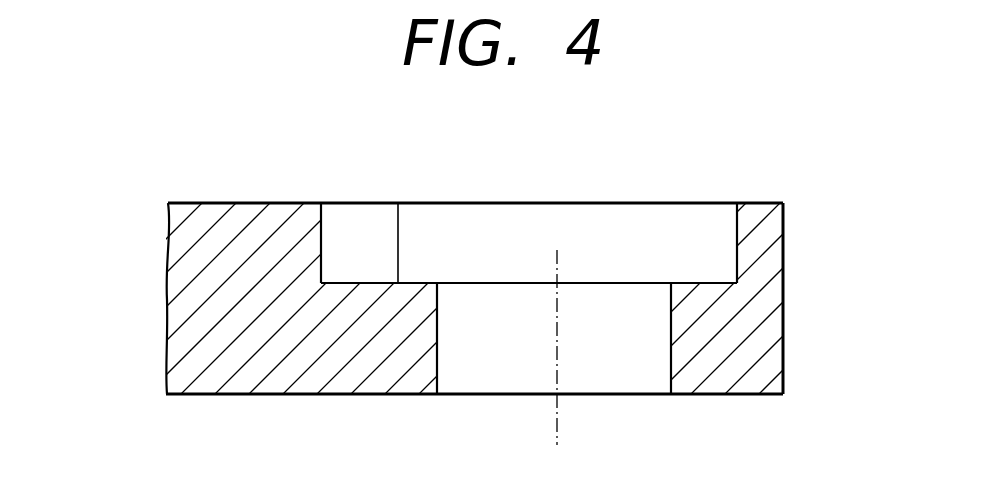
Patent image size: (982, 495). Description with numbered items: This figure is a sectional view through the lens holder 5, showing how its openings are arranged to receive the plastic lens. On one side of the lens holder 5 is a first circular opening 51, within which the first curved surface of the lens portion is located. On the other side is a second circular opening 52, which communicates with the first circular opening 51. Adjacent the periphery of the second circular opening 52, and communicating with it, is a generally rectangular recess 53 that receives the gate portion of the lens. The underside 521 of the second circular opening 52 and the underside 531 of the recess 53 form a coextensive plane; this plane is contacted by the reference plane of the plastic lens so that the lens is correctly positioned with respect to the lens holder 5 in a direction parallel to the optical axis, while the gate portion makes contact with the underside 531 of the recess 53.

The lens holder 5 is at (272, 378).
The first circular opening 51 is at (630, 383).
The second circular opening 52 is at (634, 232).
The underside of the second circular opening 521 is at (578, 282).
The rectangular recess 53 is at (343, 219).
The underside of the recess 531 is at (367, 282).